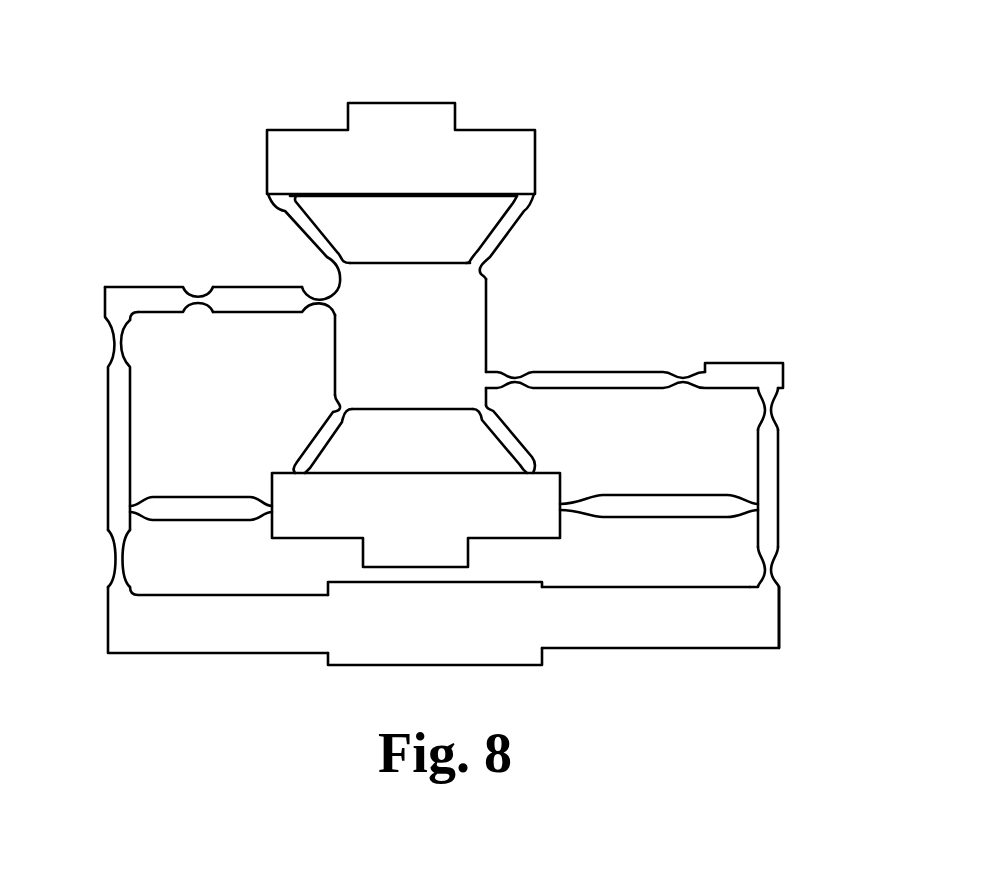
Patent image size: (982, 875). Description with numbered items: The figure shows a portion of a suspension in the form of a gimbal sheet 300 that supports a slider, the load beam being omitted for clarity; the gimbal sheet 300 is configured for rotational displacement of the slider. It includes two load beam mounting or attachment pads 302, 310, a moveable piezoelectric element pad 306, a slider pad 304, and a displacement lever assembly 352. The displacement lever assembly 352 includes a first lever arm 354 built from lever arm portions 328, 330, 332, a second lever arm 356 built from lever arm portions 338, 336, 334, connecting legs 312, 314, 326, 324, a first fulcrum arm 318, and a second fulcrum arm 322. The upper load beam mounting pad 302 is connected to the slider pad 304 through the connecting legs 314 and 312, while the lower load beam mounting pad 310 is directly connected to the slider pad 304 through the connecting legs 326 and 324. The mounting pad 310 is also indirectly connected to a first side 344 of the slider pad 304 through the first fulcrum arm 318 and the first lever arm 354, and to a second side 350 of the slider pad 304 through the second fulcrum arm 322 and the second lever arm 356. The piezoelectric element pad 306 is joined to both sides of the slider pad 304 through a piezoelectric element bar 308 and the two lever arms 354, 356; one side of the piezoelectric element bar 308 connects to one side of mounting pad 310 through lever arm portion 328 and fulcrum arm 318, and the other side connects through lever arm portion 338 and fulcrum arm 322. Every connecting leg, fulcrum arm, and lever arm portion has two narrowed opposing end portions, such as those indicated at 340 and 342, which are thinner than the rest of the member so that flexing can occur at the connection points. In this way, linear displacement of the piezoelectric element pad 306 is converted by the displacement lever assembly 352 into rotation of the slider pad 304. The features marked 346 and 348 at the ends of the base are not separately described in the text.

The gimbal sheet 300 is at (510, 75).
The load beam mounting pad 302 is at (535, 155).
The slider pad 304 is at (460, 322).
The piezoelectric element pad 306 is at (513, 665).
The piezoelectric element bar 308 is at (655, 650).
The load beam mounting pad 310 is at (550, 538).
The connecting leg 312 is at (510, 240).
The connecting leg 314 is at (301, 224).
The first fulcrum arm 318 is at (193, 520).
The second fulcrum arm 322 is at (647, 493).
The connecting leg 324 is at (518, 435).
The connecting leg 326 is at (323, 450).
The lever arm portion 328 is at (105, 383).
The lever arm portion 330 is at (148, 287).
The lever arm portion 332 is at (238, 287).
The lever arm portion 334 is at (600, 372).
The lever arm portion 336 is at (740, 363).
The lever arm portion 338 is at (780, 465).
The opposing portion 340 is at (773, 563).
The opposing portion 342 is at (772, 405).
The first side of slider pad 344 is at (334, 352).
The base left end 346 is at (108, 623).
The base right end 348 is at (782, 622).
The second side of slider pad 350 is at (486, 342).
The displacement lever assembly 352 is at (181, 377).
The first lever arm 354 is at (98, 467).
The second lever arm 356 is at (820, 488).